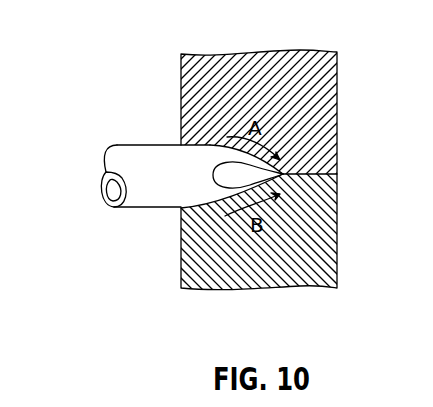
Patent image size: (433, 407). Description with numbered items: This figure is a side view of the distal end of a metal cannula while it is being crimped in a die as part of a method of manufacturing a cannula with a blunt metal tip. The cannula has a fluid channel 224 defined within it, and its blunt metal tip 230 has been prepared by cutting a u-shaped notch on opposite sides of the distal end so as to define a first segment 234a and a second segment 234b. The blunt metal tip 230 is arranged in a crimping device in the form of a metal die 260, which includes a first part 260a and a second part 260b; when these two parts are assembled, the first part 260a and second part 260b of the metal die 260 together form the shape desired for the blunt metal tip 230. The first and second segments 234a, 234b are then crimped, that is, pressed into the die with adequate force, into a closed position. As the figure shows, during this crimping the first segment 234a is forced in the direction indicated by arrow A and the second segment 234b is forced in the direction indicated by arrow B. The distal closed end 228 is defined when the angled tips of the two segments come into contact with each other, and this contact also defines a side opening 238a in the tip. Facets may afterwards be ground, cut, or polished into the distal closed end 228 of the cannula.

The fluid channel 224 is at (102, 175).
The blunt metal tip 230 is at (178, 146).
The side opening 238a is at (226, 168).
The metal die 260 is at (216, 161).
The first part 260a is at (323, 98).
The second part 260b is at (323, 268).
The first segment 234a is at (285, 171).
The second segment 234b is at (286, 178).
The distal closed end 228 is at (296, 173).